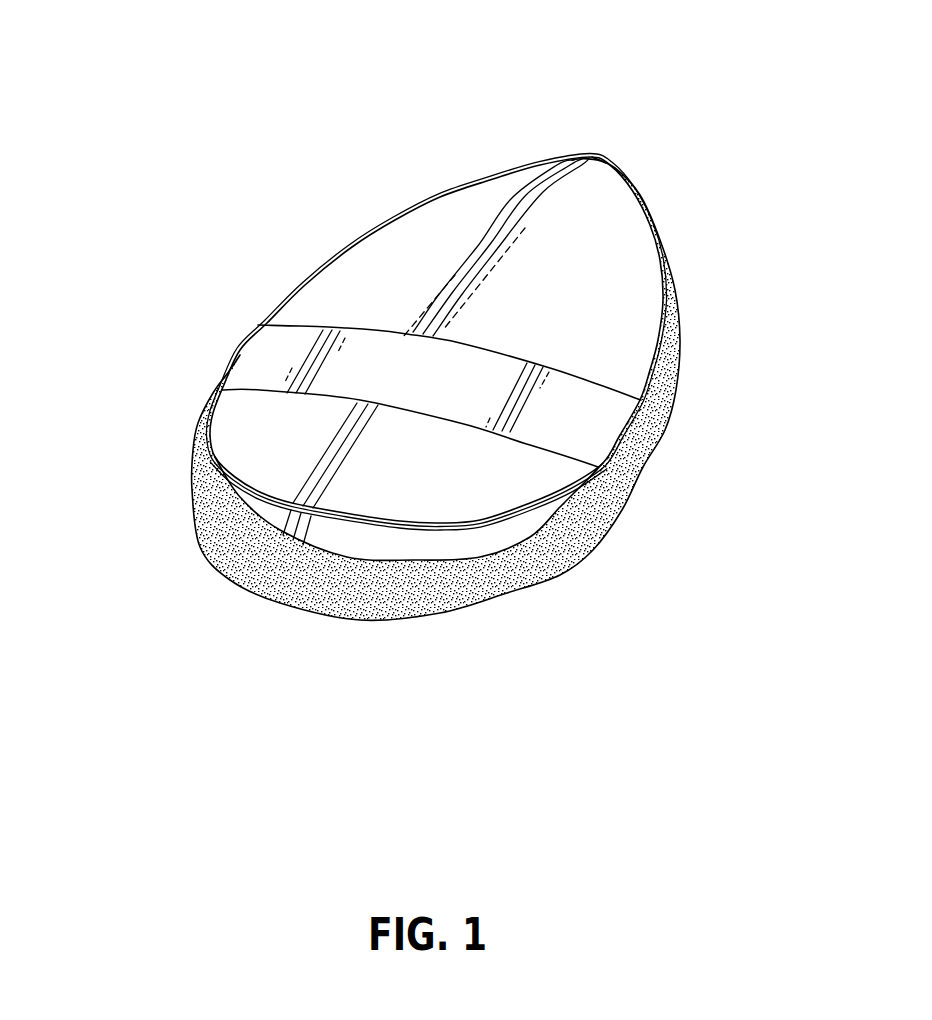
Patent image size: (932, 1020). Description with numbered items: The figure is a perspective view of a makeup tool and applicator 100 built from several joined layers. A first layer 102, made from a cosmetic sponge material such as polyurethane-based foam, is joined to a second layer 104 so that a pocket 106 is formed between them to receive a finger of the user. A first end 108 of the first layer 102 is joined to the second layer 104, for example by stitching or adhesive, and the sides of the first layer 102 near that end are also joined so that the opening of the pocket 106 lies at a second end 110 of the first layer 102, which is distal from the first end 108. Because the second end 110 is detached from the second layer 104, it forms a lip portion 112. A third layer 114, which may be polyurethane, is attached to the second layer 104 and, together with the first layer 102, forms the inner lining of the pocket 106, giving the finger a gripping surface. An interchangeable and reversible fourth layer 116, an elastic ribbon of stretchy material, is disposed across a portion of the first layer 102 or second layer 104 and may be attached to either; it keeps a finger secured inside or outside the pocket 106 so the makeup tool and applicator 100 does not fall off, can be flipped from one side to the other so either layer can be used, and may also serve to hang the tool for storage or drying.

The makeup tool and applicator 100 is at (504, 385).
The first layer 102 is at (348, 270).
The second layer 104 is at (577, 557).
The pocket 106 is at (292, 518).
The first end 108 is at (590, 156).
The second end 110 is at (262, 493).
The lip portion 112 is at (330, 493).
The third layer 114 is at (455, 543).
The fourth layer 116 is at (603, 418).